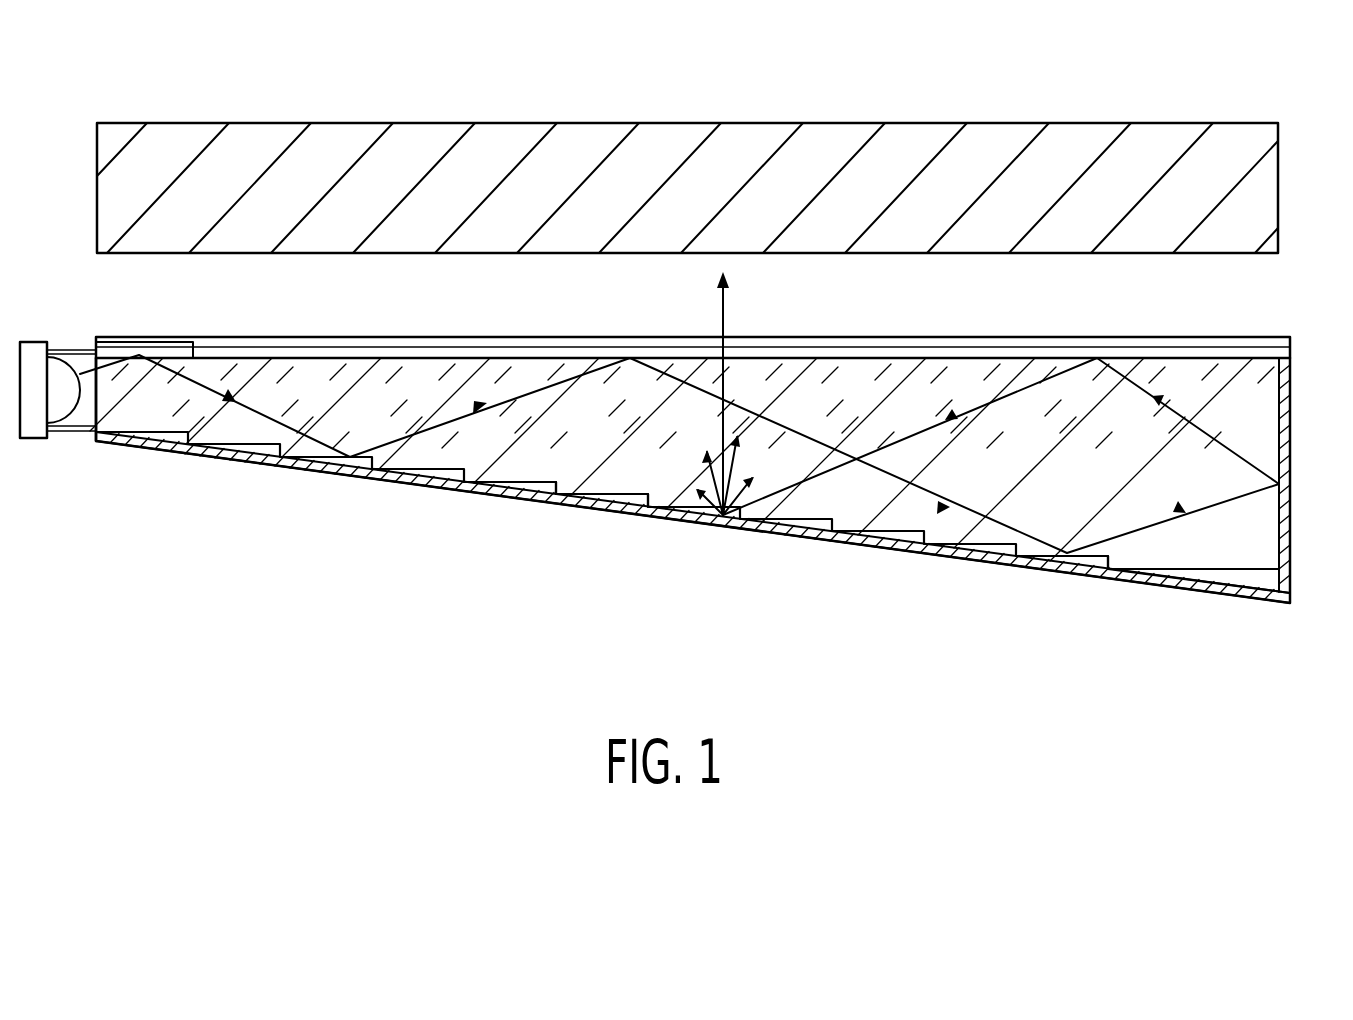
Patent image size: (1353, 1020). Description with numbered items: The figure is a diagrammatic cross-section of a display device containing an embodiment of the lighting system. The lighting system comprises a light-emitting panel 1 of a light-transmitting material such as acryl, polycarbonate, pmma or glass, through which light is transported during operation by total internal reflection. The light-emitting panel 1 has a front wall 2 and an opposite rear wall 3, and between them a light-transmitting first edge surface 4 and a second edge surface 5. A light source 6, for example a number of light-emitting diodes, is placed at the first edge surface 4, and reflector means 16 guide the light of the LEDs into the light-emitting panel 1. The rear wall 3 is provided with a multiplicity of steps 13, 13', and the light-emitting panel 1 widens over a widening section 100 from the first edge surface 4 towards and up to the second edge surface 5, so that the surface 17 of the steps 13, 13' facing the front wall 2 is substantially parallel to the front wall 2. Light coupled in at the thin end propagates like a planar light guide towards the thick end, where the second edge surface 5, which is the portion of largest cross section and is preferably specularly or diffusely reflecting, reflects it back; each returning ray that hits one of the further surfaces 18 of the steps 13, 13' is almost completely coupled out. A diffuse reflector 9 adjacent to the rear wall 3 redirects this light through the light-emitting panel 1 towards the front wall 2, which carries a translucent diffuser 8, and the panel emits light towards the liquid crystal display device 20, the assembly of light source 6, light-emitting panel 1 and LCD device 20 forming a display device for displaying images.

The liquid crystal display device 20 is at (1257, 200).
The reflector means 16 is at (72, 344).
The front wall 2 is at (189, 341).
The light-emitting panel 1 is at (348, 374).
The widening section 100 is at (407, 378).
The translucent diffuser 8 is at (1194, 338).
The light source 6 is at (34, 440).
The first edge surface 4 is at (99, 400).
The step 13 is at (687, 500).
The step 13' is at (512, 530).
The surface of the steps facing the front wall 17 is at (640, 492).
The rear wall 3 is at (883, 534).
The further surface of the steps 18 is at (1030, 552).
The diffuse reflector 9 is at (1180, 592).
The second edge surface 5 is at (1277, 545).